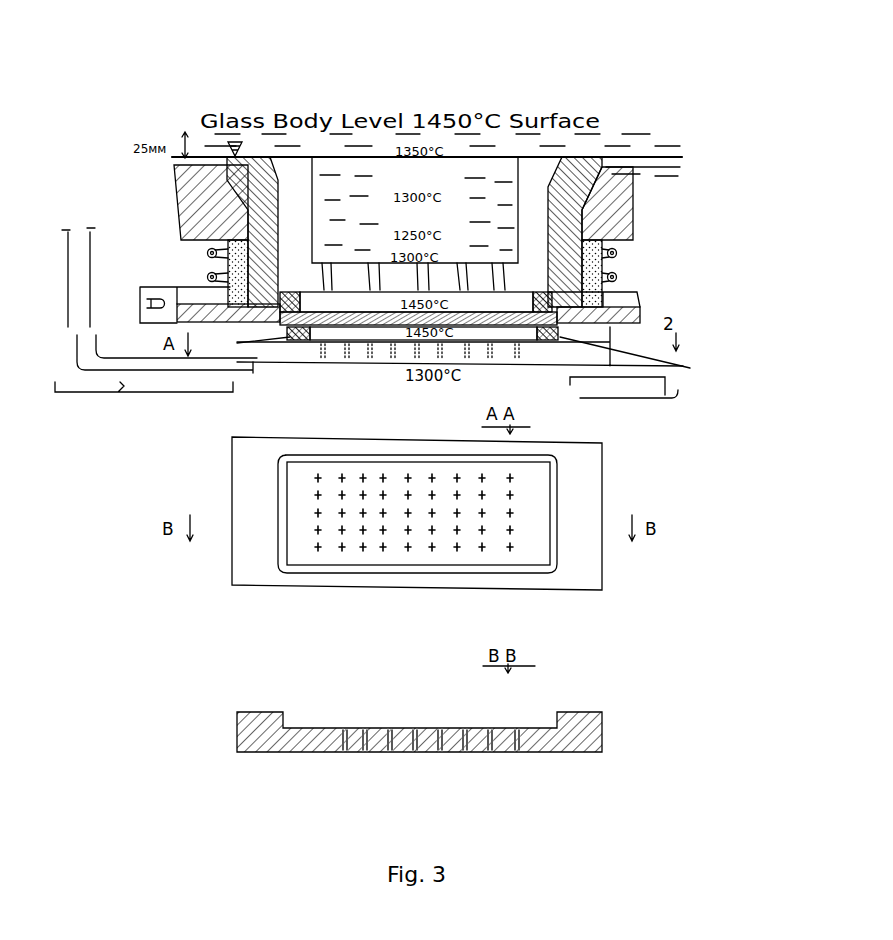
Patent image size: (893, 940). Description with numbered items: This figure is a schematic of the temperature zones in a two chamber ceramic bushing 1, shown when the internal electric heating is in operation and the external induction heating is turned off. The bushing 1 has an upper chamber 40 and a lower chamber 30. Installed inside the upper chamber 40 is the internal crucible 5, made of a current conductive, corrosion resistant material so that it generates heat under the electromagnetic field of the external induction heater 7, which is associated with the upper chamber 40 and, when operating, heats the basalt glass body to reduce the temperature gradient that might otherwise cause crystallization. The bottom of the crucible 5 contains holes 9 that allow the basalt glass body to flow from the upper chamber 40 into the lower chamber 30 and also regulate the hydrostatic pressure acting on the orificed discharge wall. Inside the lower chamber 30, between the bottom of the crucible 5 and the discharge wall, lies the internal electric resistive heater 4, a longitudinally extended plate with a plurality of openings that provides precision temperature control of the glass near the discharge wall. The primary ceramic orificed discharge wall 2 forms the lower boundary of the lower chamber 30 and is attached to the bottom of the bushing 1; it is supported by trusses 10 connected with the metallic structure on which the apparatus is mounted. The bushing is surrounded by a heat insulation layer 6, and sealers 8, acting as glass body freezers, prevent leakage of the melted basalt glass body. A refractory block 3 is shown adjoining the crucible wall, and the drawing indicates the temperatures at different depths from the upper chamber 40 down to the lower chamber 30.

The ceramic bushing 1 is at (262, 210).
The ceramic orificed discharge wall 2 is at (250, 395).
The refractory block 3 is at (623, 203).
The internal electric resistive heater 4 is at (640, 318).
The internal crucible 5 is at (634, 231).
The heat insulation layer 6 is at (593, 262).
The external induction heater 7 is at (616, 275).
The sealer 8 is at (237, 352).
The holes 9 is at (460, 268).
The trusses 10 is at (125, 392).
The lower chamber 30 is at (580, 325).
The upper chamber 40 is at (347, 178).